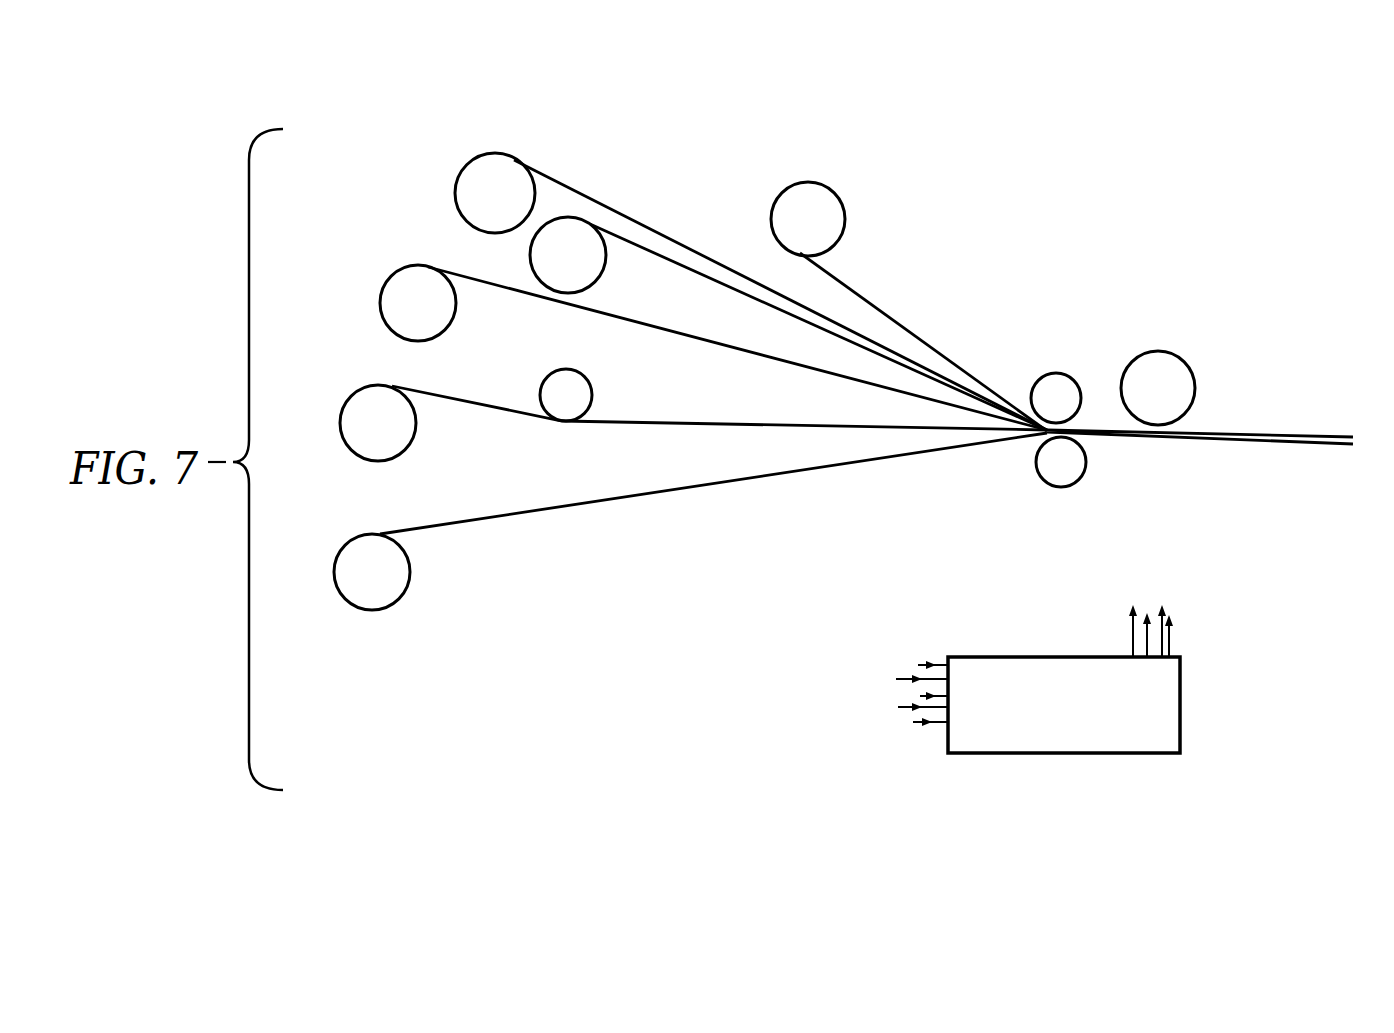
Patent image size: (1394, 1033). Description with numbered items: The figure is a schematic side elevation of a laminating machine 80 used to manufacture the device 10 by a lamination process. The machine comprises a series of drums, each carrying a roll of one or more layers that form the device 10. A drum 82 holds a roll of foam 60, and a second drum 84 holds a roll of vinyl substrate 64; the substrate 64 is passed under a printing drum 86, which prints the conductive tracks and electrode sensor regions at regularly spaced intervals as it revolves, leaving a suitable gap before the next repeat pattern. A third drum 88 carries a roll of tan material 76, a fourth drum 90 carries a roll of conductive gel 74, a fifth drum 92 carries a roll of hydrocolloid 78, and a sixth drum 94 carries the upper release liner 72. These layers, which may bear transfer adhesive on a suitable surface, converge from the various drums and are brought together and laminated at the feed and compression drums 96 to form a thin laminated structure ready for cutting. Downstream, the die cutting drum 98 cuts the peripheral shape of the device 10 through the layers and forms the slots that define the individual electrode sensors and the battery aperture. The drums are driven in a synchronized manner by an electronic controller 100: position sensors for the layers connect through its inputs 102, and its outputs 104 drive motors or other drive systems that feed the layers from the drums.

The device 10 is at (1278, 434).
The foam 60 is at (620, 498).
The vinyl substrate 64 is at (678, 422).
The upper release liner 72 is at (902, 325).
The conductive gel 74 is at (694, 276).
The tan material 76 is at (602, 316).
The hydrocolloid 78 is at (658, 233).
The laminating machine 80 is at (898, 245).
The drum 82 is at (390, 587).
The second drum 84 is at (396, 438).
The printing drum 86 is at (582, 407).
The third drum 88 is at (436, 318).
The fourth drum 90 is at (586, 270).
The fifth drum 92 is at (513, 208).
The sixth drum 94 is at (826, 234).
The feed and compression drums 96 is at (1072, 410).
The die cutting drum 98 is at (1176, 403).
The electronic controller 100 is at (1043, 737).
The inputs 102 is at (880, 701).
The outputs 104 is at (1188, 617).